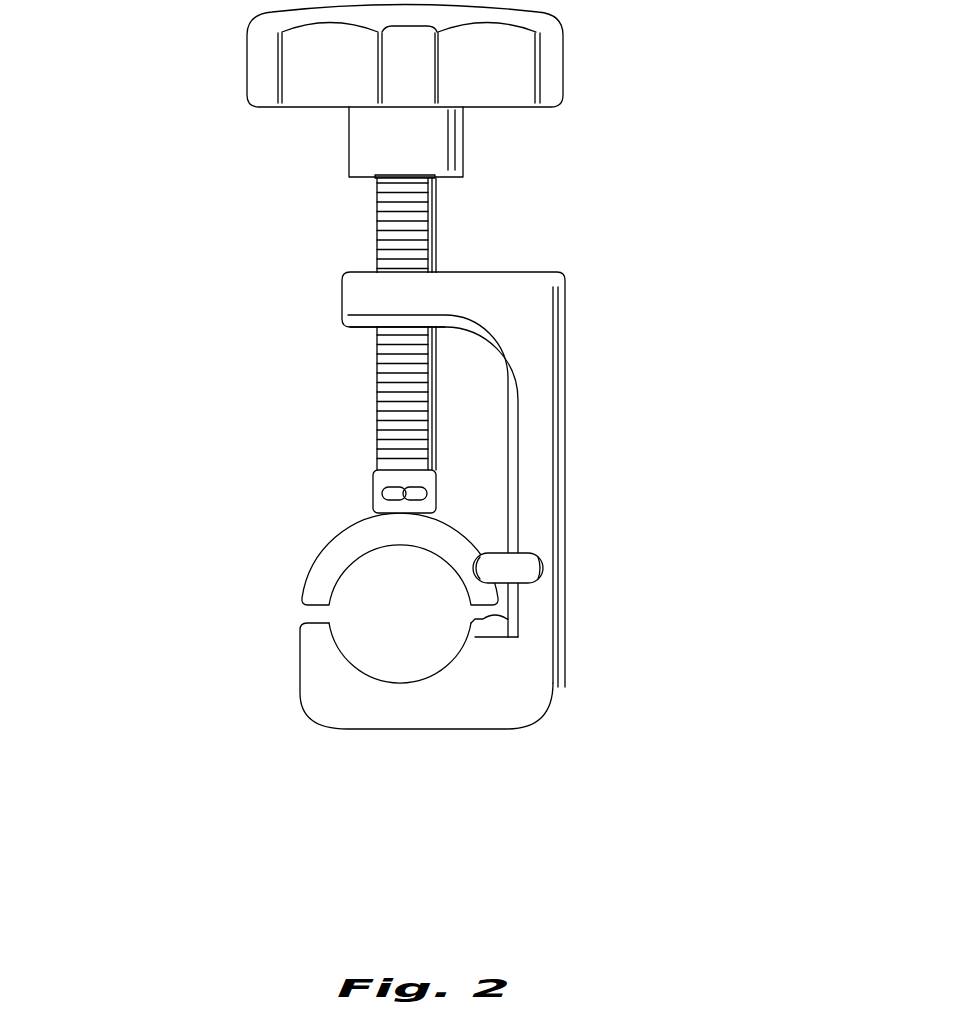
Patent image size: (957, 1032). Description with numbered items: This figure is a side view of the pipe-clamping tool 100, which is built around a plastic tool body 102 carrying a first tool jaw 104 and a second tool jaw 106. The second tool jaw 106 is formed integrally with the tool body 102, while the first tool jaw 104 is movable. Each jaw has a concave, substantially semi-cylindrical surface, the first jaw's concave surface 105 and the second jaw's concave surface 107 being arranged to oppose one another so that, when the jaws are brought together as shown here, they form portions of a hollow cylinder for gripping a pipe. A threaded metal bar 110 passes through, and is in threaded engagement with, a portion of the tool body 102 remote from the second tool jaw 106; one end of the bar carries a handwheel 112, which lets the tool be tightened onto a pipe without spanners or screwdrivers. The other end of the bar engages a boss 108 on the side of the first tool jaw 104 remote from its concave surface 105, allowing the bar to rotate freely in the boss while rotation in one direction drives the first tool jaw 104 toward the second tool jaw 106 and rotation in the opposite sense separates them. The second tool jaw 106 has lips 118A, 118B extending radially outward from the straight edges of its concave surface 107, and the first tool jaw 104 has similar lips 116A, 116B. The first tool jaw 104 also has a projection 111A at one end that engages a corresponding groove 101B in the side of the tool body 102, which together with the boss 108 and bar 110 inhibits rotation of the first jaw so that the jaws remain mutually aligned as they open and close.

The pipe-clamping tool 100 is at (447, 431).
The groove 101B is at (548, 443).
The tool body 102 is at (459, 550).
The first tool jaw 104 is at (420, 605).
The concave surface 105 is at (428, 547).
The second tool jaw 106 is at (425, 736).
The concave surface 107 is at (397, 685).
The boss 108 is at (373, 479).
The metal bar 110 is at (377, 229).
The projection 111A is at (512, 567).
The handwheel 112 is at (262, 70).
The lip 116A is at (308, 606).
The lip 116B is at (490, 605).
The lip 118A is at (300, 621).
The lip 118B is at (500, 622).